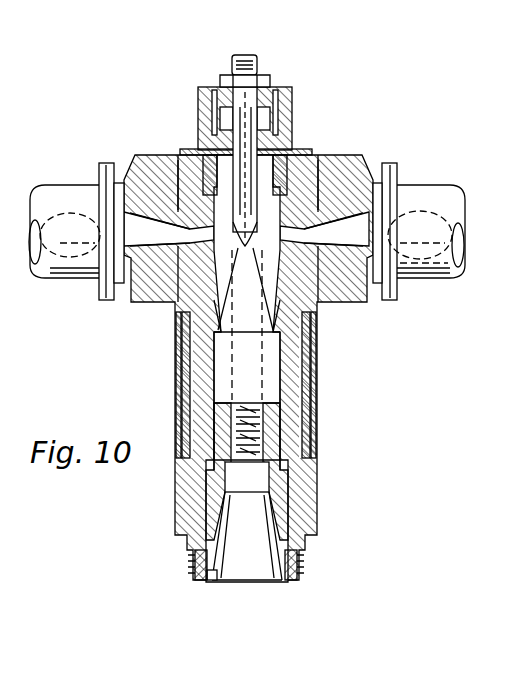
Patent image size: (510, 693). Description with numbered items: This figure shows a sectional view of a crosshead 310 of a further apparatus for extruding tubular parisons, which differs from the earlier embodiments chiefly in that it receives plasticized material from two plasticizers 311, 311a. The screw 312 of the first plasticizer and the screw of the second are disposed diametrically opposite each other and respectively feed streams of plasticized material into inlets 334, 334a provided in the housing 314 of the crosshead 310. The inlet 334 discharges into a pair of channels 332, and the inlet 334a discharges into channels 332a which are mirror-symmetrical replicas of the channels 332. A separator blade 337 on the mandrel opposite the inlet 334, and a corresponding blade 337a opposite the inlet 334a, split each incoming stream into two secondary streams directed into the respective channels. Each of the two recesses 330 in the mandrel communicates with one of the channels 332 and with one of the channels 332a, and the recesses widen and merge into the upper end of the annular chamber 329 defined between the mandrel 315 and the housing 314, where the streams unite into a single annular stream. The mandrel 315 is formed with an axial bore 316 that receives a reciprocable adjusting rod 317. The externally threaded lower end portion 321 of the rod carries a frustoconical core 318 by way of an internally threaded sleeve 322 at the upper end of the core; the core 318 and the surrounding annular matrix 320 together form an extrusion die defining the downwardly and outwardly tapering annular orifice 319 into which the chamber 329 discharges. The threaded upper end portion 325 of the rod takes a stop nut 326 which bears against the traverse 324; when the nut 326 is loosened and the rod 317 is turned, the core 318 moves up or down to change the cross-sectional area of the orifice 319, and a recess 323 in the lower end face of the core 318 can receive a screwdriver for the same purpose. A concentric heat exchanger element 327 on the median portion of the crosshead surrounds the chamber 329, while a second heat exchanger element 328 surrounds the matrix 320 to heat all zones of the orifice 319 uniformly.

The crosshead 310 is at (168, 320).
The plasticizer 311 is at (438, 184).
The plasticizer 311a is at (68, 182).
The screw 312 is at (440, 275).
The housing 314 is at (183, 282).
The mandrel 315 is at (217, 350).
The axial bore 316 is at (235, 380).
The adjusting rod 317 is at (245, 414).
The core 318 is at (250, 580).
The extrusion orifice 319 is at (216, 580).
The matrix 320 is at (195, 571).
The lower end portion 321 is at (277, 438).
The sleeve 322 is at (247, 477).
The recess 323 is at (223, 425).
The traverse 324 is at (272, 92).
The upper end portion 325 is at (258, 58).
The stop nut 326 is at (225, 78).
The heat exchanger element 327 is at (302, 377).
The second heat exchanger element 328 is at (300, 571).
The annular chamber 329 is at (280, 352).
The recess 330 is at (255, 318).
The channel 332 is at (300, 160).
The channel 332a is at (210, 158).
The inlet 334 is at (300, 222).
The inlet 334a is at (190, 222).
The blade 337 is at (292, 233).
The blade 337a is at (196, 233).